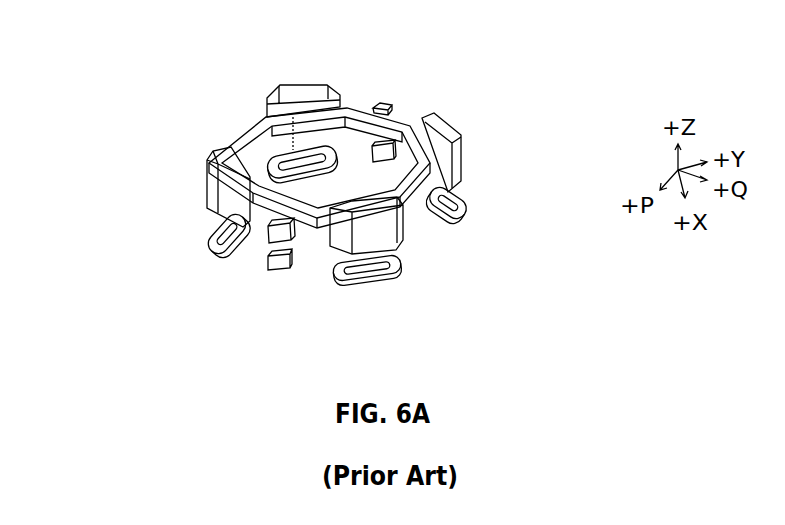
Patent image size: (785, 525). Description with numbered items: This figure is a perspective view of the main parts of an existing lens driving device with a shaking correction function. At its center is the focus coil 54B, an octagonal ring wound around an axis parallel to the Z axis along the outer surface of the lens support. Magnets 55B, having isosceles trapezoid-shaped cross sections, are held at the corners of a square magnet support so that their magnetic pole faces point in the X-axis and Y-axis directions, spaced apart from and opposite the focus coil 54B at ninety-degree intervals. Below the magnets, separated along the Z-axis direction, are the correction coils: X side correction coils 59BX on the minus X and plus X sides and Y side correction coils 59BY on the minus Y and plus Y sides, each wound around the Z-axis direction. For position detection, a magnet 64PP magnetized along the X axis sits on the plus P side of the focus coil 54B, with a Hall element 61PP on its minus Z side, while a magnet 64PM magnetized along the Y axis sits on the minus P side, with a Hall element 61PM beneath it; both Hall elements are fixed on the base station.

The focus coil 54B is at (240, 136).
The magnet 55B is at (461, 138).
The X side correction coil 59BX is at (290, 86).
The Y side correction coil 59BY is at (207, 230).
The Hall element 61PM is at (374, 143).
The magnet used for position detection 64PM is at (384, 105).
The Hall element 61PP is at (277, 262).
The magnet used for position detection 64PP is at (297, 244).